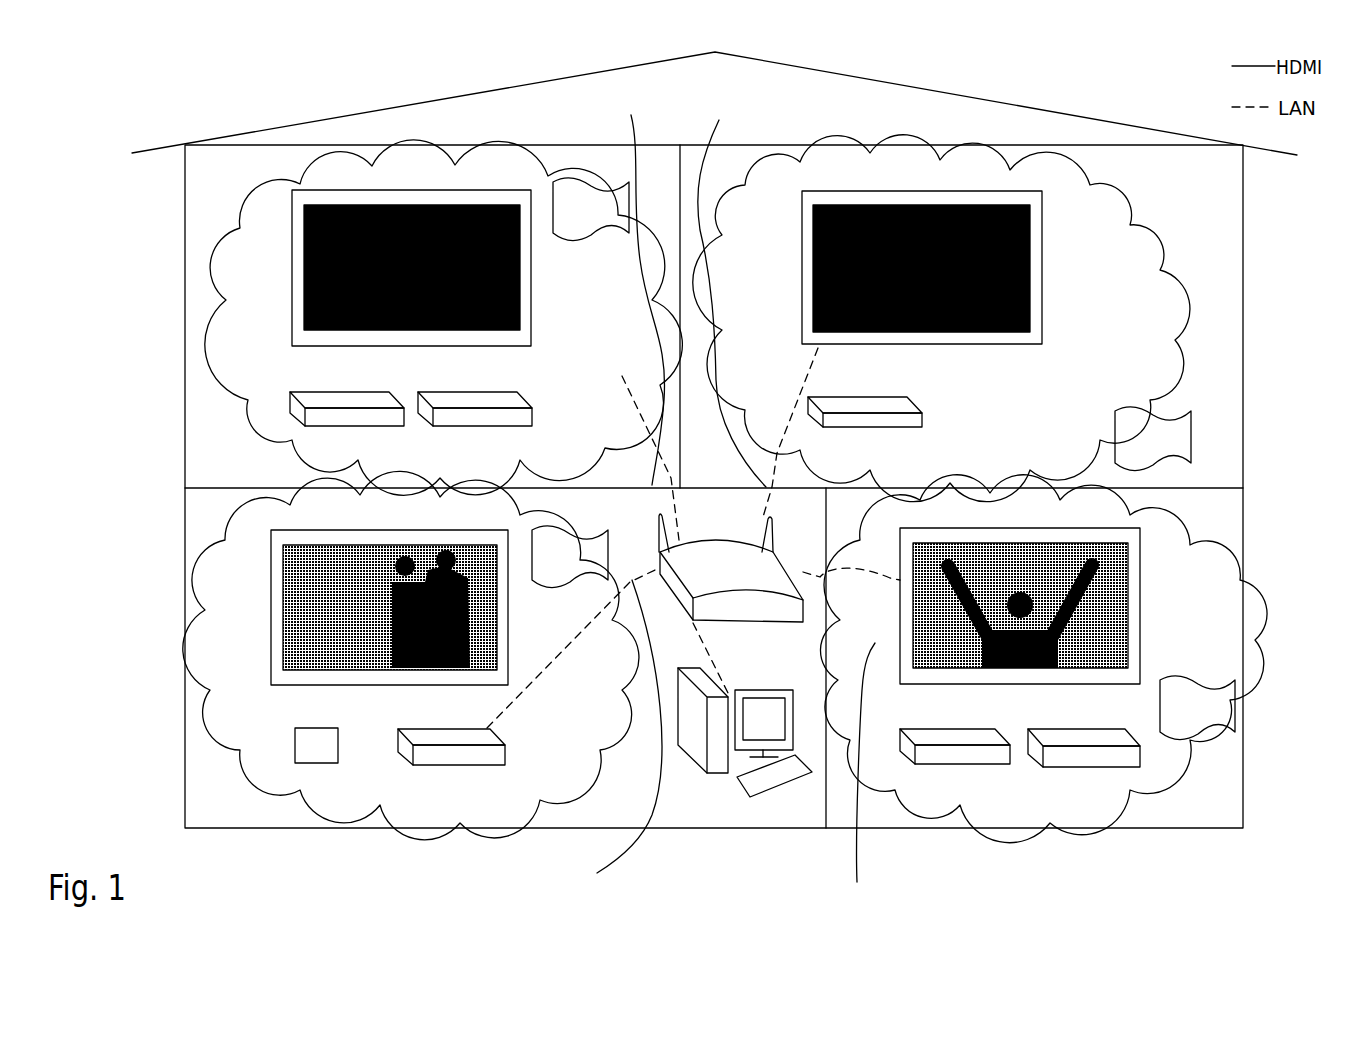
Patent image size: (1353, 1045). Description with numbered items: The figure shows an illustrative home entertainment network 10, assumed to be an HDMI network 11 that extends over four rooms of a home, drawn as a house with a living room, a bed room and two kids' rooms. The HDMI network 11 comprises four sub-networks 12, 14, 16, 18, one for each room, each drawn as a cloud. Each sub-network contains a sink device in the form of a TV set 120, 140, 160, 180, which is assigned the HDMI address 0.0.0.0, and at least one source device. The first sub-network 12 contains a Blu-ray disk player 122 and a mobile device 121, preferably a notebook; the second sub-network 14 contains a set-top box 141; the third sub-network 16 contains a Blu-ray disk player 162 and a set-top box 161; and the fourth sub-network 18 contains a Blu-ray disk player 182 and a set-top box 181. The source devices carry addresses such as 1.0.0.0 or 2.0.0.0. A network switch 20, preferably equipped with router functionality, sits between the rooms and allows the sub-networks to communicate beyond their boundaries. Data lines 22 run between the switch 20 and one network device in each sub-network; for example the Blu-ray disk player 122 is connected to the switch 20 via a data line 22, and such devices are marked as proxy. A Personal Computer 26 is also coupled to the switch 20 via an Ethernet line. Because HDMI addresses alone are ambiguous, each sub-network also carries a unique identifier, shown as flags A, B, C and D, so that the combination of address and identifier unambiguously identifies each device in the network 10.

The home entertainment network 10 is at (140, 132).
The HDMI network 11 is at (714, 440).
The sub-network 12 is at (458, 808).
The sub-network 14 is at (1067, 214).
The sub-network 16 is at (1155, 747).
The sub-network 18 is at (317, 183).
The network switch 20 is at (807, 622).
The data line 22 is at (693, 501).
The Personal Computer 26 is at (772, 788).
The TV set 120 is at (310, 567).
The mobile device 121 is at (295, 742).
The Blu-ray disk player 122 is at (387, 782).
The TV set 140 is at (1017, 247).
The set-top box 141 is at (818, 398).
The TV set 160 is at (1117, 568).
The set-top box 161 is at (903, 755).
The Blu-ray disk player 162 is at (1037, 767).
The TV set 180 is at (317, 244).
The set-top box 181 is at (290, 394).
The Blu-ray disk player 182 is at (524, 391).